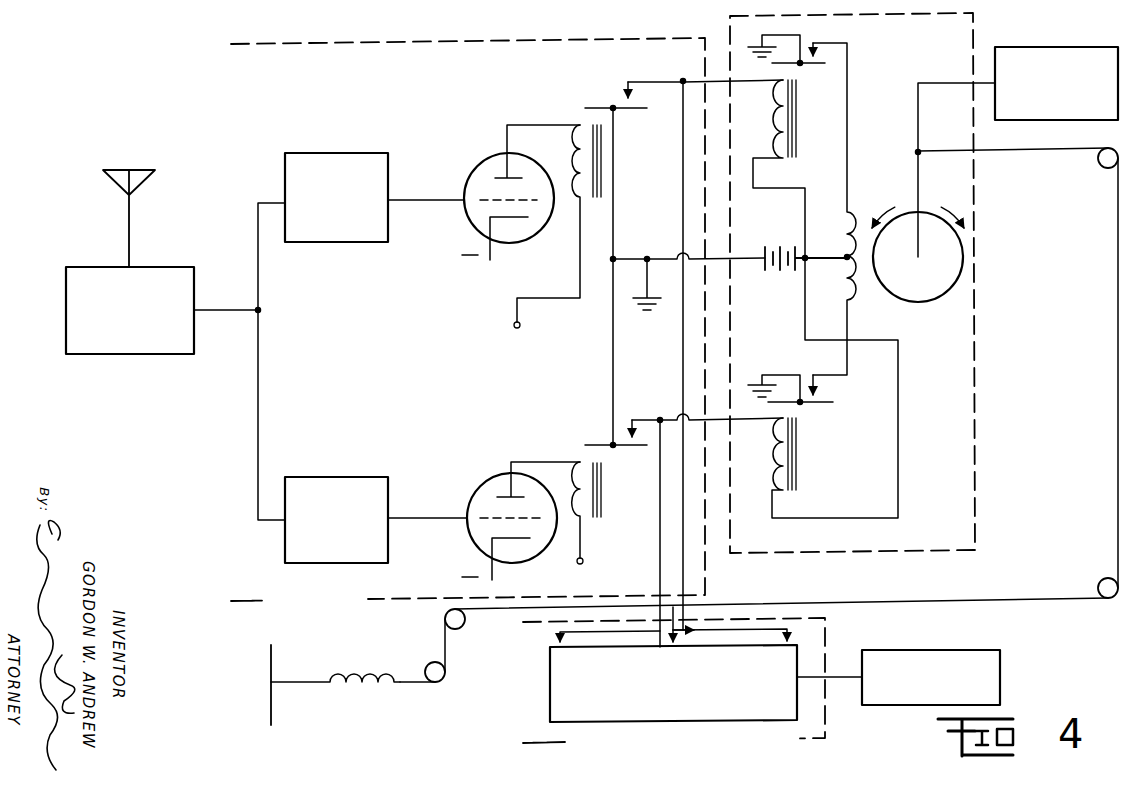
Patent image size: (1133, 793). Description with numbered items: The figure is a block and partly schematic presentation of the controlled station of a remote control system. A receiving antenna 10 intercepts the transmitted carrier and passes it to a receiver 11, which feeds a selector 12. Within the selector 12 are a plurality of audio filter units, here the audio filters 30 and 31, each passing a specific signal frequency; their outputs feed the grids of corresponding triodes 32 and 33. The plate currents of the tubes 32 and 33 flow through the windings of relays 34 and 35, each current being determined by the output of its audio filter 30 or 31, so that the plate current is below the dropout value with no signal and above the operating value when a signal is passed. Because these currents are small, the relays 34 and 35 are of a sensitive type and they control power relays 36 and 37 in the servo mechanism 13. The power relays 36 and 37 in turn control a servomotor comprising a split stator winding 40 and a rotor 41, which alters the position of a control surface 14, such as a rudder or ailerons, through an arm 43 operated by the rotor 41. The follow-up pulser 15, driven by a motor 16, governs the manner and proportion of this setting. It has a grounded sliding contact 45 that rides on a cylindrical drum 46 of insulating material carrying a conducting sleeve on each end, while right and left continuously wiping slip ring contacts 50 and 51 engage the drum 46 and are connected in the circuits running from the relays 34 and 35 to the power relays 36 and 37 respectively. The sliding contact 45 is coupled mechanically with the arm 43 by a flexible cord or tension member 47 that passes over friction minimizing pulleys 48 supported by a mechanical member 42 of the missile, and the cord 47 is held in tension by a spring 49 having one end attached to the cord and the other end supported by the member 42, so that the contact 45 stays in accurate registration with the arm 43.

The receiving antenna 10 is at (131, 228).
The receiver 11 is at (128, 355).
The selector 12 is at (394, 599).
The servo mechanism 13 is at (893, 553).
The control surface 14 is at (1050, 47).
The follow-up pulser 15 is at (826, 718).
The motor 16 is at (918, 706).
The audio filter 30 is at (336, 243).
The audio filter 31 is at (337, 479).
The triode 32 is at (512, 243).
The triode 33 is at (514, 563).
The relay 34 is at (614, 110).
The relay 35 is at (614, 447).
The power relay 36 is at (801, 65).
The power relay 37 is at (801, 404).
The split stator winding 40 is at (846, 272).
The rotor 41 is at (918, 302).
The mechanical member 42 is at (272, 705).
The arm 43 is at (921, 163).
The sliding contact 45 is at (672, 634).
The drum 46 is at (794, 721).
The tension member 47 is at (1116, 470).
The pulley 48 is at (1100, 166).
The spring 49 is at (360, 690).
The slip ring contact 50 is at (787, 630).
The slip ring contact 51 is at (559, 632).